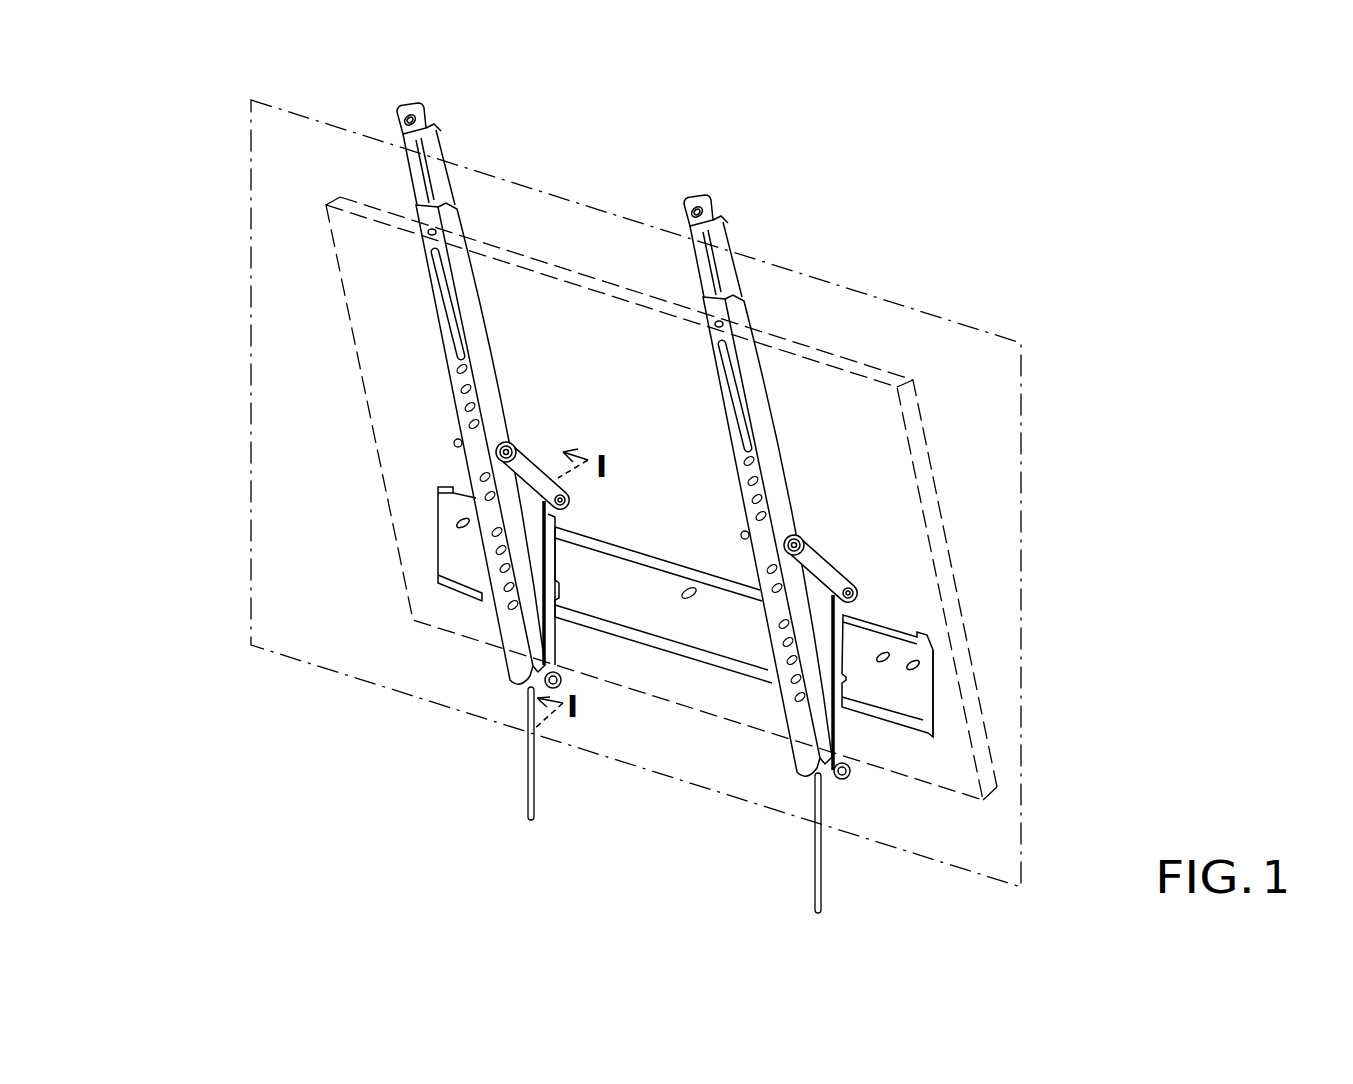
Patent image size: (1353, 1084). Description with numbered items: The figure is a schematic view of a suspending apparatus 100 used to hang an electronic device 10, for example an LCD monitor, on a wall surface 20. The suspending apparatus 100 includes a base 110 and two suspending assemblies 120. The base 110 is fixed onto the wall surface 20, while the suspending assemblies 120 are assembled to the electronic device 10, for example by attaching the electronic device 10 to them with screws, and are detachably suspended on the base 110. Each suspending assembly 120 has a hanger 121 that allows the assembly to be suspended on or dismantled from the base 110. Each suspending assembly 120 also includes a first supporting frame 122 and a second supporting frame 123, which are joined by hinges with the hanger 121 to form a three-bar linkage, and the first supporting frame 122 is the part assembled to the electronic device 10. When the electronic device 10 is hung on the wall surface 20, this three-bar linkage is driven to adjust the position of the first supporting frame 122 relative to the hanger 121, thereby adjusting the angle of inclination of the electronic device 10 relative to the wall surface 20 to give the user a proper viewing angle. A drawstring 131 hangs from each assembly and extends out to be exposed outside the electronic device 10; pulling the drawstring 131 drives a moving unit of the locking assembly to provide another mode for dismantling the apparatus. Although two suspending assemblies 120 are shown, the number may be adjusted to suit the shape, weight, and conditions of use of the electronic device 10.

The electronic device 10 is at (927, 445).
The wall surface 20 is at (1024, 386).
The suspending apparatus 100 is at (1212, 581).
The base 110 is at (940, 722).
The suspending assembly 120 is at (633, 441).
The hanger 121 is at (547, 561).
The first supporting frame 122 is at (460, 398).
The second supporting frame 123 is at (473, 487).
The drawstring 131 is at (820, 865).